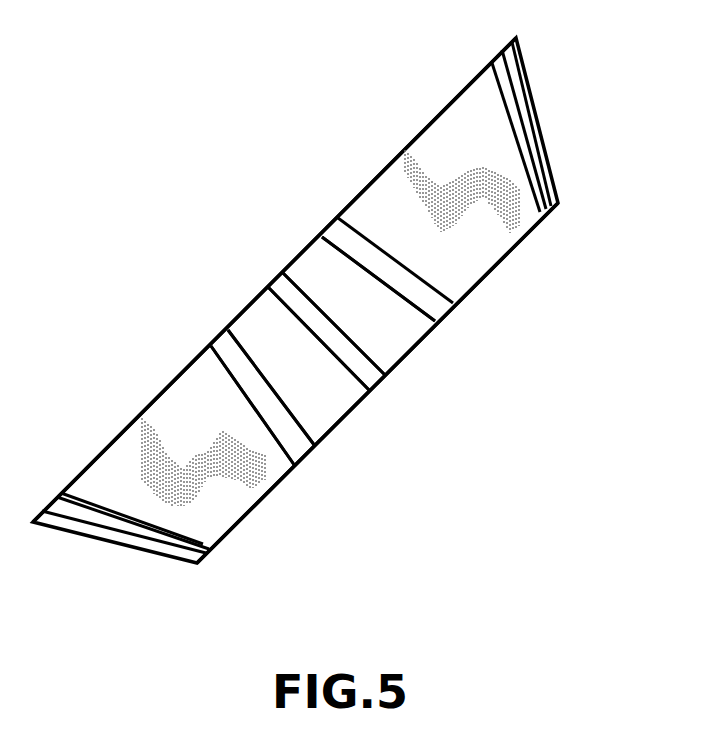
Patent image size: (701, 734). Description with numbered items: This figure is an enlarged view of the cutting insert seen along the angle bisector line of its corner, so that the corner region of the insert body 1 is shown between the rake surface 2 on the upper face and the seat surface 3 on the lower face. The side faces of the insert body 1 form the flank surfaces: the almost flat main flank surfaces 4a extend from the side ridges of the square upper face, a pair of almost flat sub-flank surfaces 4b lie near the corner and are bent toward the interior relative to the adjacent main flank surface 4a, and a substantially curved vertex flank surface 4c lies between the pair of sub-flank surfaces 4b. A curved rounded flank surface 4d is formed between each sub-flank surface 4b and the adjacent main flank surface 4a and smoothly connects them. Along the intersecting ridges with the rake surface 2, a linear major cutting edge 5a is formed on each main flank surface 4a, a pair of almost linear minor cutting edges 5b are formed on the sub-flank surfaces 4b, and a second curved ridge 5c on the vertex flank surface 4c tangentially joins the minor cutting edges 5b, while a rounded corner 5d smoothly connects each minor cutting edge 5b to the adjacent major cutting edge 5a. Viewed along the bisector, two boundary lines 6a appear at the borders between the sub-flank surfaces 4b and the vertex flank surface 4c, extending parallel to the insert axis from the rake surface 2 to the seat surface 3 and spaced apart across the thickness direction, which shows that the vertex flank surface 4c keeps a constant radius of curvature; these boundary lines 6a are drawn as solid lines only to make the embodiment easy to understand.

The insert body 1 is at (575, 93).
The rake surface 2 is at (150, 402).
The seat surface 3 is at (498, 266).
The main flank surface 4a is at (508, 240).
The sub-flank surface 4b is at (403, 350).
The vertex flank surface 4c is at (343, 217).
The rounded flank surface 4d is at (440, 308).
The major cutting edge 5a is at (414, 150).
The minor cutting edge 5b is at (282, 270).
The second curved ridge 5c is at (267, 285).
The rounded corner 5d is at (318, 234).
The boundary line 6a is at (343, 333).